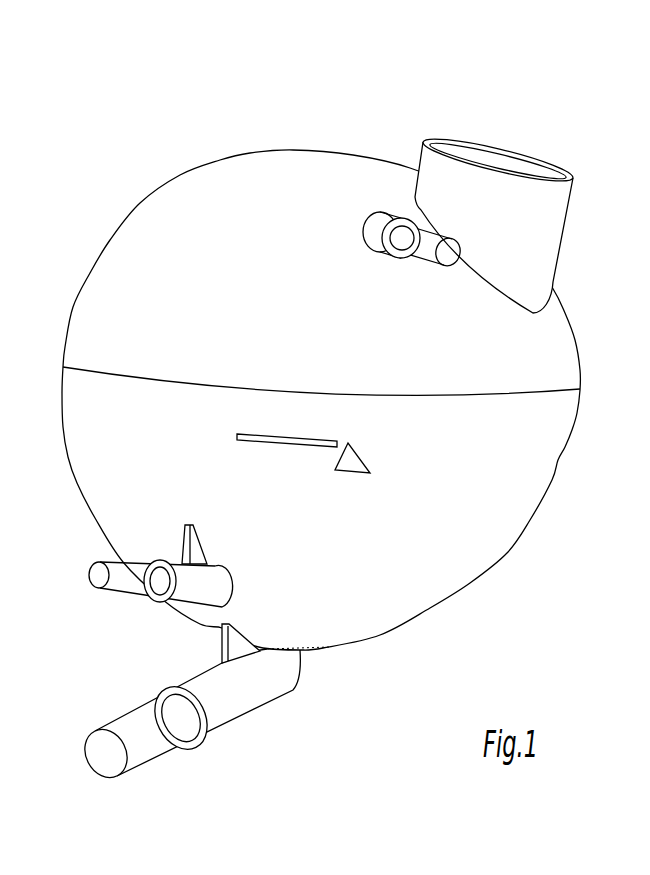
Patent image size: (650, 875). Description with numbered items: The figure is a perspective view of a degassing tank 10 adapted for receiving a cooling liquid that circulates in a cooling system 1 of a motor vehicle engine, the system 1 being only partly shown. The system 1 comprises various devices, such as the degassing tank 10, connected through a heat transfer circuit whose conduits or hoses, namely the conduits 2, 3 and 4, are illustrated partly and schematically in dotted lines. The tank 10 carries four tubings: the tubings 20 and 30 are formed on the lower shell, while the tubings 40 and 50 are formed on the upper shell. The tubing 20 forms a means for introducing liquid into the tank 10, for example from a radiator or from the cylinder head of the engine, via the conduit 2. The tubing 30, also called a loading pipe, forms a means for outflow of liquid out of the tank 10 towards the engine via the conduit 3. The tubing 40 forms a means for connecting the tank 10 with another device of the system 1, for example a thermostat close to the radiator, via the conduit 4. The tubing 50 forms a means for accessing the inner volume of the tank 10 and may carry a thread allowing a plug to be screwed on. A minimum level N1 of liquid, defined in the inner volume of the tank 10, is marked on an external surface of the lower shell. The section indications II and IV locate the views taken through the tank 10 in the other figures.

The tank assembly 1 is at (221, 58).
The spherical tank 10 is at (178, 195).
The filler neck 50 is at (562, 153).
The connection fitting 40 is at (413, 277).
The fitting opening 4 is at (437, 268).
The minimum level marking N1 is at (372, 436).
The small pipe connection 20 is at (146, 597).
The small pipe opening 2 is at (86, 594).
The large pipe connection 30 is at (203, 730).
The large pipe opening 3 is at (92, 770).
The section line II is at (70, 519).
The section line IV is at (503, 463).